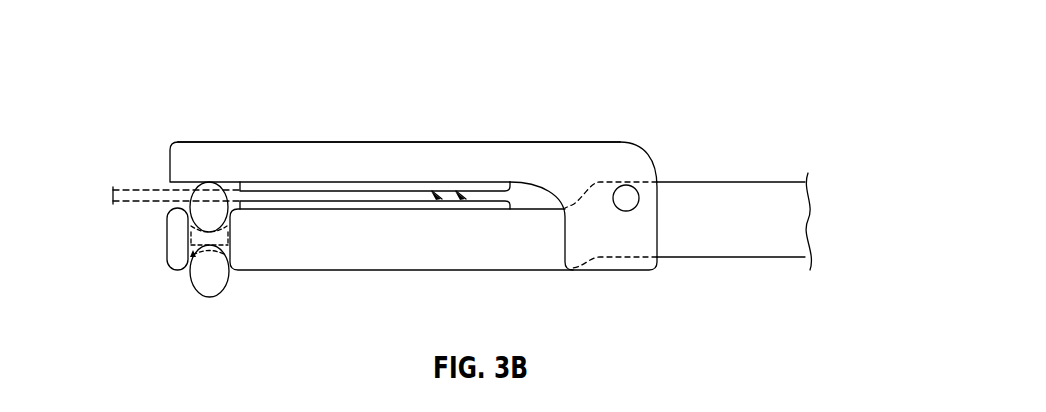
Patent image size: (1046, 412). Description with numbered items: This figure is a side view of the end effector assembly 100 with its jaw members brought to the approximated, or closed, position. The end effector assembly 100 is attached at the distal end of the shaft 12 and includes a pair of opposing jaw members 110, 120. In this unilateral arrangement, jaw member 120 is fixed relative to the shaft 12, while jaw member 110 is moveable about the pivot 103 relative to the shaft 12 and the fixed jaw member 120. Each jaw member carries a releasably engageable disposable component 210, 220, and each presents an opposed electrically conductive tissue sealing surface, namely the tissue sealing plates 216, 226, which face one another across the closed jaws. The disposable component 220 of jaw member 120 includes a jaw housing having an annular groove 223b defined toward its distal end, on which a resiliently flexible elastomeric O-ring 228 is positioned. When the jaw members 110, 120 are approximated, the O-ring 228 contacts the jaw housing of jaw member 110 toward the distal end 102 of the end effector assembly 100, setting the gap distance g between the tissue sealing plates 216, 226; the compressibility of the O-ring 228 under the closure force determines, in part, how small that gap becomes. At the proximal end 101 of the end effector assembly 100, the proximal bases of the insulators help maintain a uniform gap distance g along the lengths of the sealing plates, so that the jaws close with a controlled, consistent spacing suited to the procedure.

The end effector assembly 100 is at (443, 58).
The proximal end 101 is at (556, 256).
The distal end 102 is at (174, 241).
The pivot 103 is at (626, 198).
The shaft 12 is at (760, 200).
The jaw member 110 is at (194, 152).
The jaw member 120 is at (328, 247).
The disposable component 210 is at (350, 148).
The disposable component 220 is at (257, 247).
The tissue sealing surface 216 is at (466, 197).
The tissue sealing plate 226 is at (424, 190).
The annular groove 223b is at (192, 257).
The O-ring 228 is at (214, 277).
The gap distance g is at (112, 196).